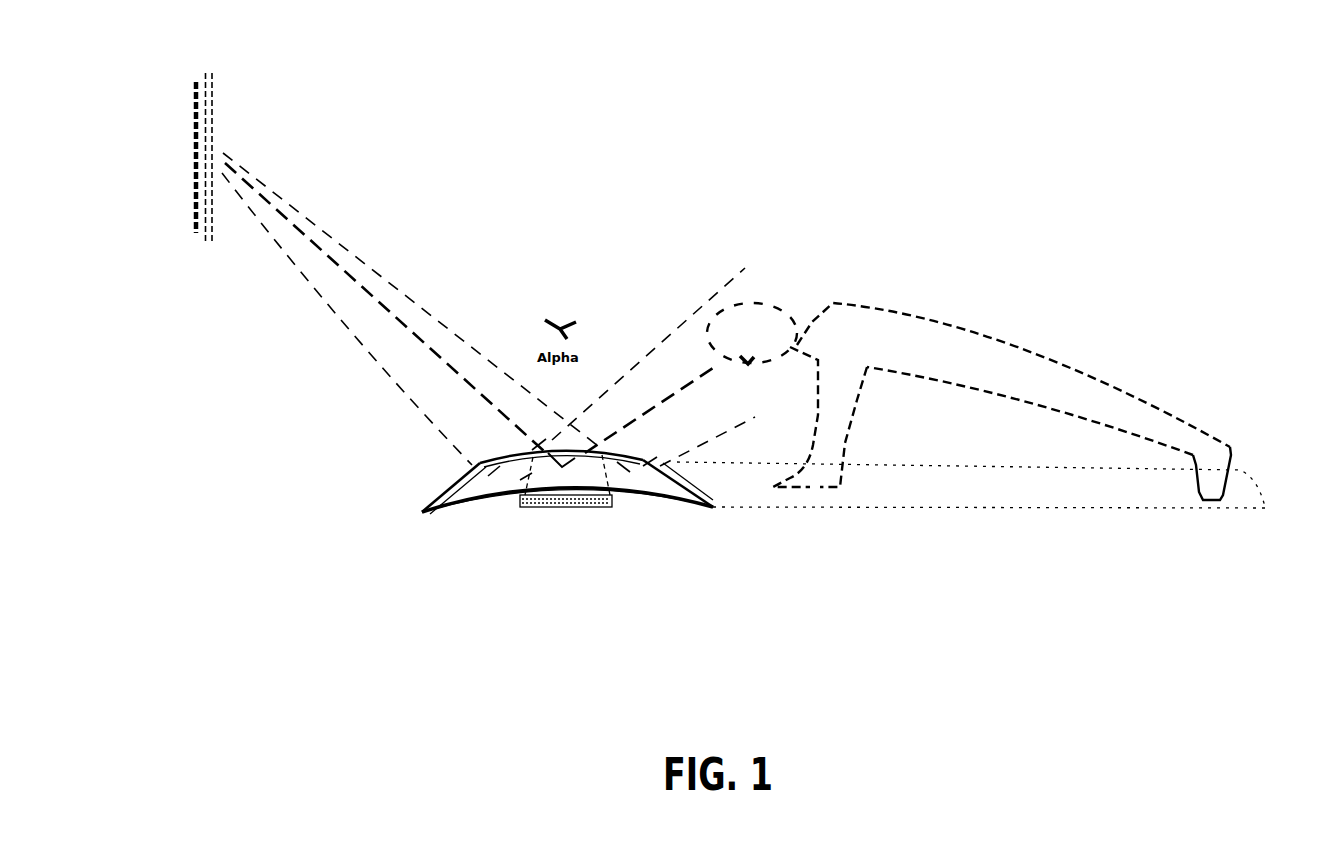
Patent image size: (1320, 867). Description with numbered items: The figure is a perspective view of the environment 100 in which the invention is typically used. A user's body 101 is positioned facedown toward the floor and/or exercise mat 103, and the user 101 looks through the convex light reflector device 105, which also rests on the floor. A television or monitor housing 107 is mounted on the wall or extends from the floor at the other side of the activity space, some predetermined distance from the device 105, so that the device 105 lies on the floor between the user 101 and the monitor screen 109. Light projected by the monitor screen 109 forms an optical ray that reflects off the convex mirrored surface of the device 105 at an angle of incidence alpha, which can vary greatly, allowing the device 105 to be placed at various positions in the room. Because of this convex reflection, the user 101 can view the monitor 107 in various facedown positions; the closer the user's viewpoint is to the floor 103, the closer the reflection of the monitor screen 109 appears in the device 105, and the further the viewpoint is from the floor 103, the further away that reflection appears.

The environment 100 is at (863, 653).
The user's body 101 is at (938, 315).
The floor and/or exercise mat 103 is at (1018, 503).
The convex light reflector device 105 is at (558, 500).
The television or monitor housing 107 is at (195, 220).
The monitor screen 109 is at (212, 83).